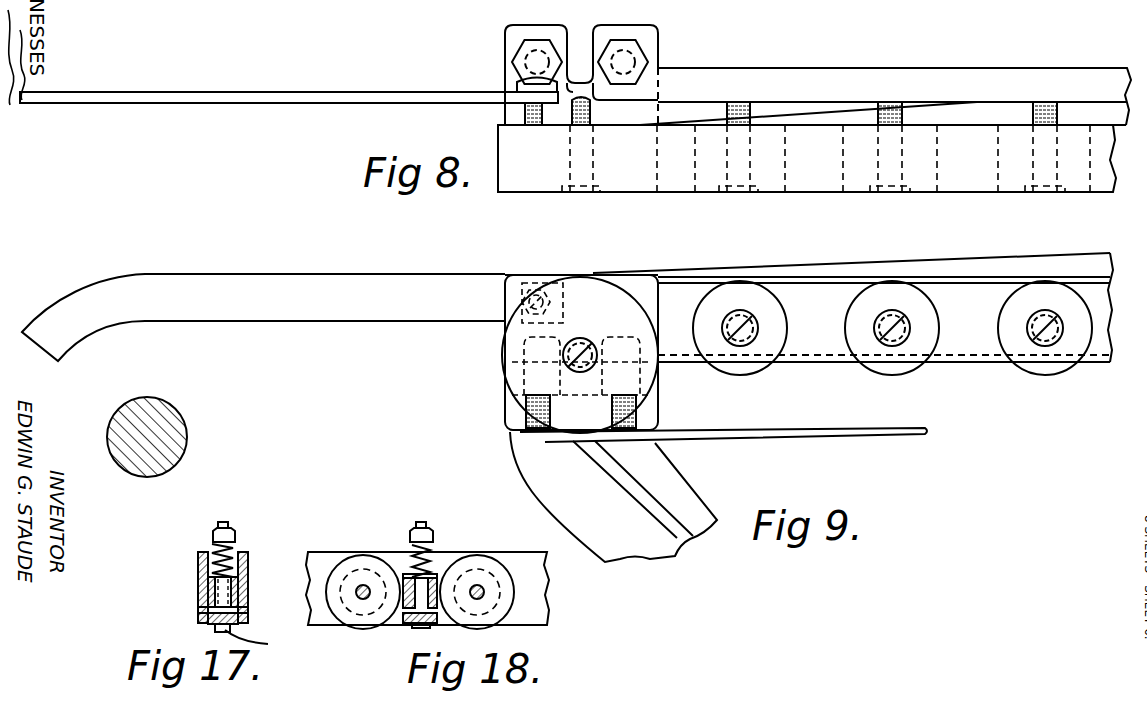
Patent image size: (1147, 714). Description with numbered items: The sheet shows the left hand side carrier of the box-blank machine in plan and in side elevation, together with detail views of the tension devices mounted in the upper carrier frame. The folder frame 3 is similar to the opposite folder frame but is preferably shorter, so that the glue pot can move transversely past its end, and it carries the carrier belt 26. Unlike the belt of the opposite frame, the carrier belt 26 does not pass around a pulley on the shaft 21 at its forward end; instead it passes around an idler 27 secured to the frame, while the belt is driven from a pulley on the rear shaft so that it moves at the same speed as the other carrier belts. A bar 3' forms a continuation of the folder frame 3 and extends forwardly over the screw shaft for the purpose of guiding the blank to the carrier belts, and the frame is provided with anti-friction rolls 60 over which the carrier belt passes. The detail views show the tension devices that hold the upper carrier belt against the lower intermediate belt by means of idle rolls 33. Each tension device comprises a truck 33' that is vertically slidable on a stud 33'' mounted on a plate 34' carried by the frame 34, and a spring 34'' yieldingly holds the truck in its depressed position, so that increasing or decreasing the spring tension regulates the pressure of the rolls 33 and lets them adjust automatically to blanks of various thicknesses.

In FIG. 8, the folder frame 3 is at (885, 79).
In FIG. 9, the folder frame 3 is at (885, 336).
In FIG. 8, the bar 3' is at (289, 121).
In FIG. 9, the bar 3' is at (263, 323).
In FIG. 9, the shaft 21 is at (172, 413).
In FIG. 8, the carrier belt 26 is at (807, 192).
In FIG. 9, the carrier belt 26 is at (788, 276).
In FIG. 8, the idler 27 is at (523, 193).
In FIG. 9, the idler 27 is at (648, 375).
In FIG. 9, the anti-friction rolls 60 is at (877, 368).
In FIG. 17, the idle rolls 33 is at (264, 646).
In FIG. 18, the idle rolls 33 is at (438, 561).
In FIG. 17, the truck 33' is at (184, 603).
In FIG. 18, the truck 33' is at (398, 630).
In FIG. 17, the stud 33'' is at (251, 505).
In FIG. 18, the stud 33'' is at (454, 514).
In FIG. 17, the frame 34 is at (246, 572).
In FIG. 18, the frame 34 is at (454, 588).
In FIG. 17, the plate 34' is at (258, 614).
In FIG. 18, the plate 34' is at (494, 639).
In FIG. 17, the spring 34'' is at (194, 549).
In FIG. 18, the spring 34'' is at (400, 535).